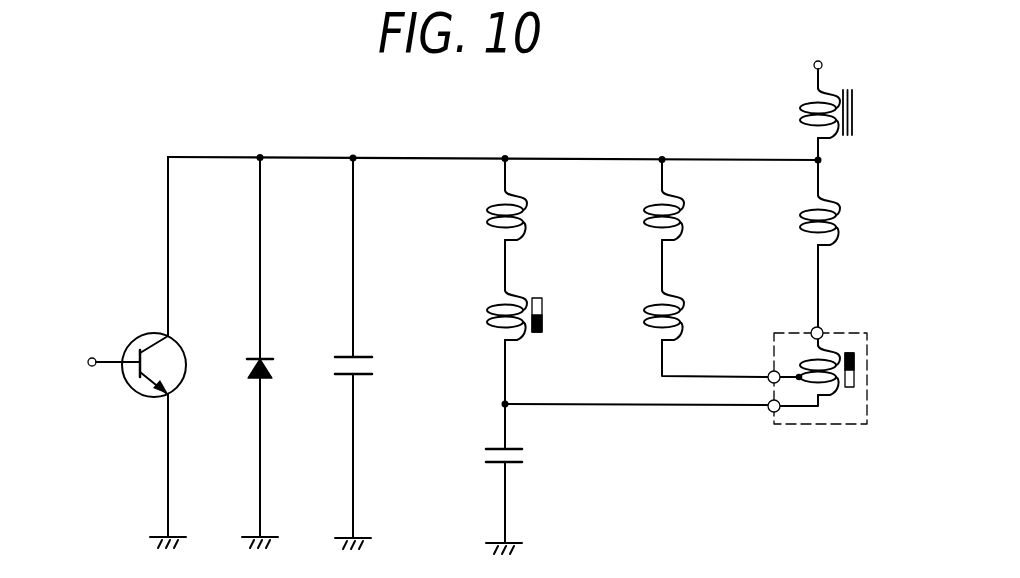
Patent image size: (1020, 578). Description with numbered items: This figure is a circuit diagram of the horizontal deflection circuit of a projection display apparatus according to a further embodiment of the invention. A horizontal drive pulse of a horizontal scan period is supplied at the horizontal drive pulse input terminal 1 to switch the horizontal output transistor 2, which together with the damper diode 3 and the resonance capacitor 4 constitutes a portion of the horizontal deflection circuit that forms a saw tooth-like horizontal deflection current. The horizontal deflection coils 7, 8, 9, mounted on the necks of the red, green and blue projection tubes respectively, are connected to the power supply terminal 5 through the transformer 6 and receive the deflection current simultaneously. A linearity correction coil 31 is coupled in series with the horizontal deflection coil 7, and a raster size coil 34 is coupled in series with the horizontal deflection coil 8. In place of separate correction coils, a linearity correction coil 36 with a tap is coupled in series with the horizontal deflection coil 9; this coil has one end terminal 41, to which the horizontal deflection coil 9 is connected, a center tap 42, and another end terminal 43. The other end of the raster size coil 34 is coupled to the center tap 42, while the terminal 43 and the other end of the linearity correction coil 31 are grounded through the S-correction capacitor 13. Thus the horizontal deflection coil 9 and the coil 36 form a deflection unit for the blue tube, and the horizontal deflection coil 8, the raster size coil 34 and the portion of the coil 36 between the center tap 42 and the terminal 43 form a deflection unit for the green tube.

The horizontal drive pulse input terminal 1 is at (97, 355).
The horizontal output transistor 2 is at (179, 339).
The damper diode 3 is at (267, 351).
The resonance capacitor 4 is at (363, 353).
The power supply terminal 5 is at (812, 64).
The transformer 6 is at (854, 116).
The horizontal deflection coil 7 is at (480, 218).
The horizontal deflection coil 8 is at (633, 222).
The horizontal deflection coil 9 is at (794, 222).
The S-correction capacitor 13 is at (524, 458).
The linearity correction coil 31 is at (479, 312).
The raster size coil 34 is at (639, 311).
The linearity correction coil with a tap 36 is at (799, 387).
The one end terminal 41 is at (825, 330).
The center tap 42 is at (771, 371).
The another end terminal 43 is at (770, 412).